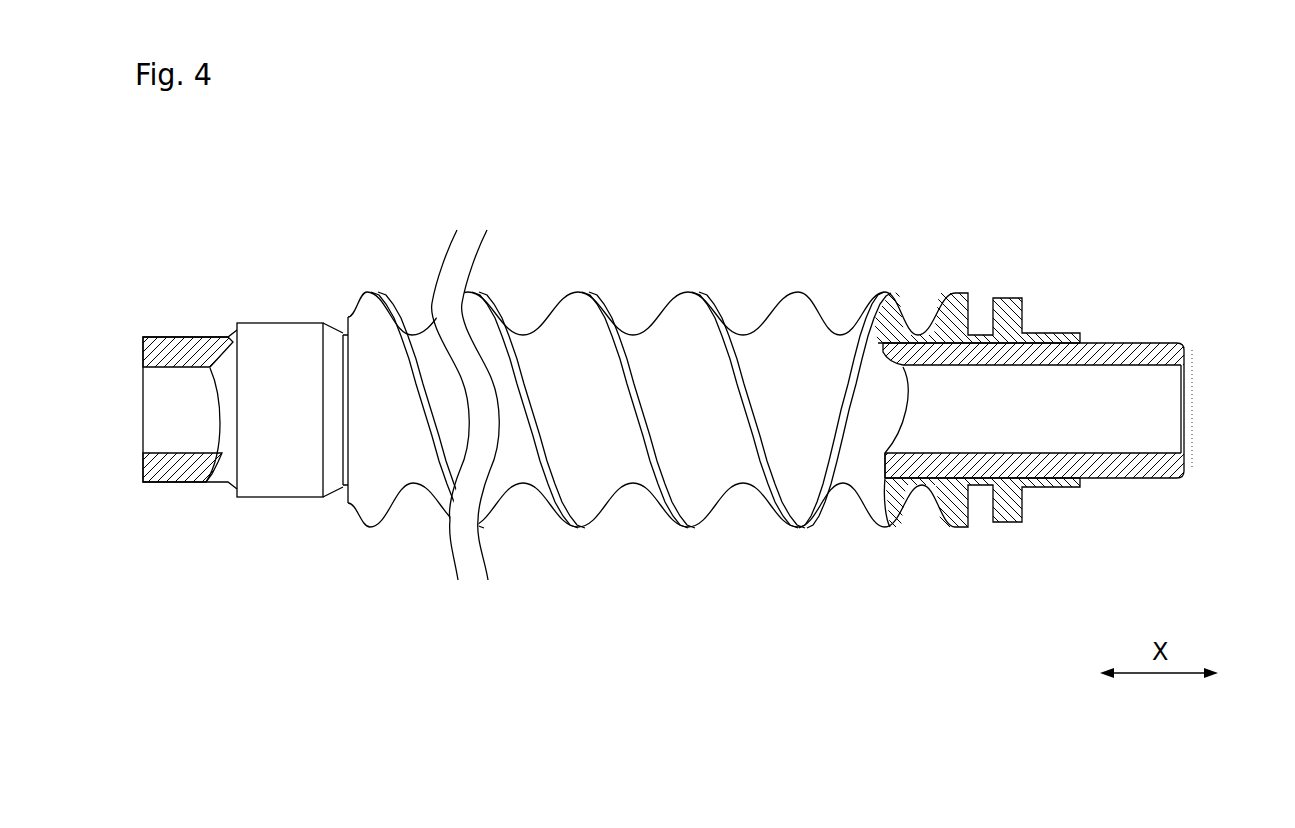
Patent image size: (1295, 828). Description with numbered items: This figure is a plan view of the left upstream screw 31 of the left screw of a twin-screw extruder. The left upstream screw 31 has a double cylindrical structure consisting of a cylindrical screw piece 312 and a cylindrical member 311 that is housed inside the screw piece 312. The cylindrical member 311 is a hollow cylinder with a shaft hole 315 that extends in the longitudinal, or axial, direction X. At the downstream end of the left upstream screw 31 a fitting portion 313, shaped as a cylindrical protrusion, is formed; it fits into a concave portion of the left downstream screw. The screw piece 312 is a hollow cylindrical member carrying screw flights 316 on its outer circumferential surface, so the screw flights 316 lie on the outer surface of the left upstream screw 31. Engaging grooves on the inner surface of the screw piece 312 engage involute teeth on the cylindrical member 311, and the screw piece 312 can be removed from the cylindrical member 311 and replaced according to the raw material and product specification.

The left upstream screw 31 is at (1146, 281).
The cylindrical member 311 is at (935, 357).
The screw piece 312 is at (663, 352).
The fitting portion 313 is at (1145, 462).
The shaft hole 315 is at (1153, 367).
The screw flights 316 is at (690, 526).